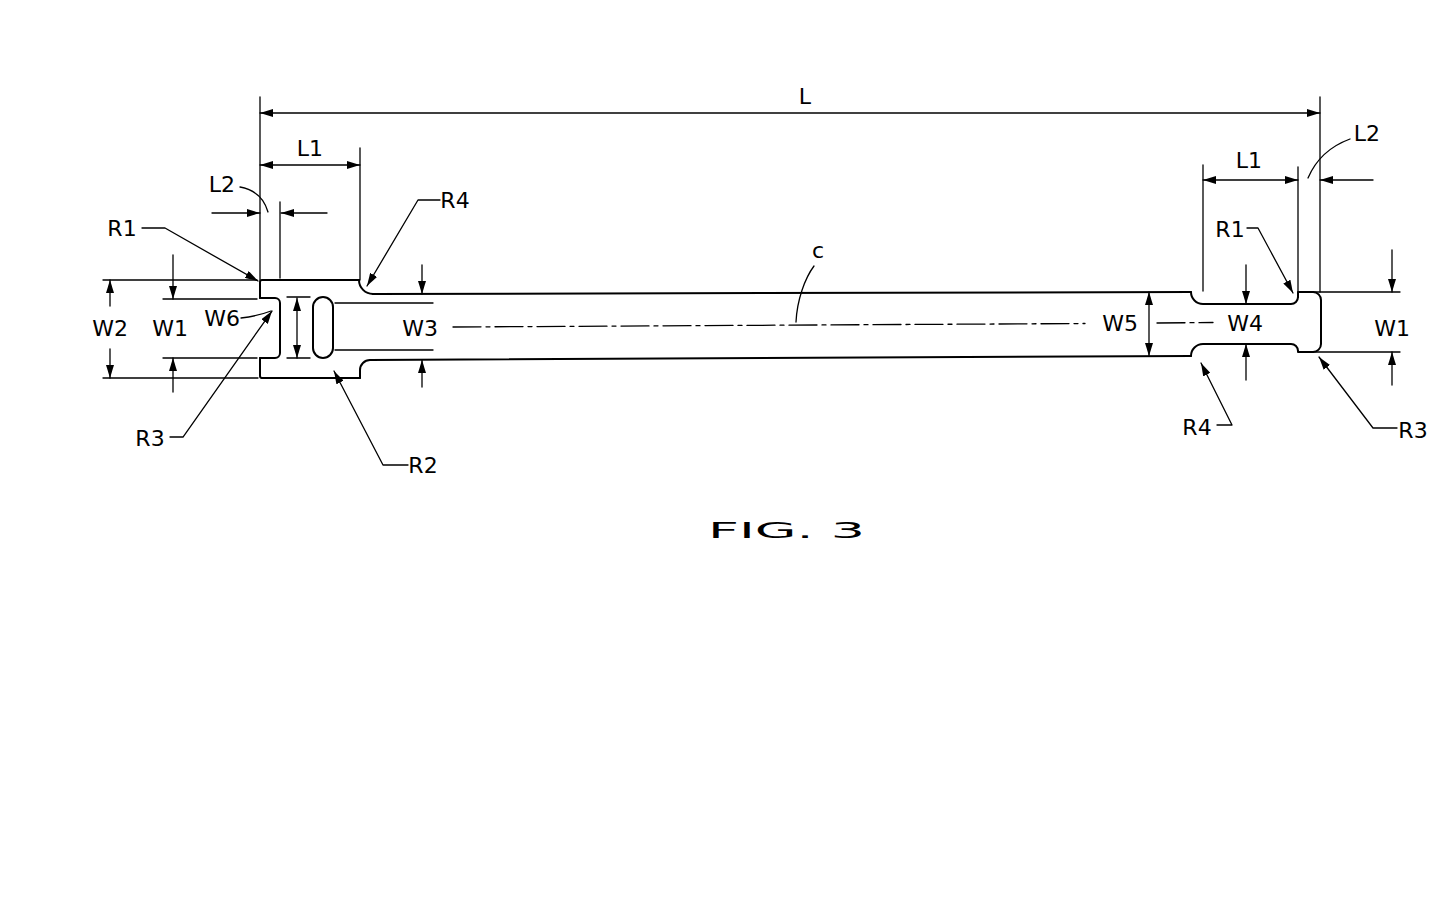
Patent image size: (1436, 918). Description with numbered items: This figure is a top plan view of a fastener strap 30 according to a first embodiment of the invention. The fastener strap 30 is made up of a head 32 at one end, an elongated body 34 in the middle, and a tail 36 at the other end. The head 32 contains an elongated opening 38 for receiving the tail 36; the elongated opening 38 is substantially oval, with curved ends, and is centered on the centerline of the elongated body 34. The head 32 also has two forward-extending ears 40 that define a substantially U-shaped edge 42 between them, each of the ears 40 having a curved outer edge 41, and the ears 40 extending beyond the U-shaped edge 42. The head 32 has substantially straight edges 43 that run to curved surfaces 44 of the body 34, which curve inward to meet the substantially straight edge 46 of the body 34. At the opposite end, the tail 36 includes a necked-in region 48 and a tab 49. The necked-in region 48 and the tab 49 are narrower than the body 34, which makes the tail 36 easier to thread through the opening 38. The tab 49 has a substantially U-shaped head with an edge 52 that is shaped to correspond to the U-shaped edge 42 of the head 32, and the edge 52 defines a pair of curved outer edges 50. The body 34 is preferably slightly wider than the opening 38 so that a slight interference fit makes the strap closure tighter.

The fastener strap 30 is at (1092, 78).
The head 32 is at (246, 481).
The elongated body 34 is at (791, 296).
The tail 36 is at (1262, 468).
The elongated opening 38 is at (326, 325).
The forward-extending ears 40 is at (263, 295).
The curved outer edge 41 is at (256, 281).
The U-shaped edge 42 is at (279, 335).
The straight edges 43 is at (303, 378).
The curved surfaces 44 is at (383, 289).
The straight edge 46 is at (528, 293).
The necked-in region 48 is at (1222, 286).
The tab 49 is at (1314, 354).
The curved outer edges 50 is at (1305, 291).
The edge 52 is at (1323, 319).